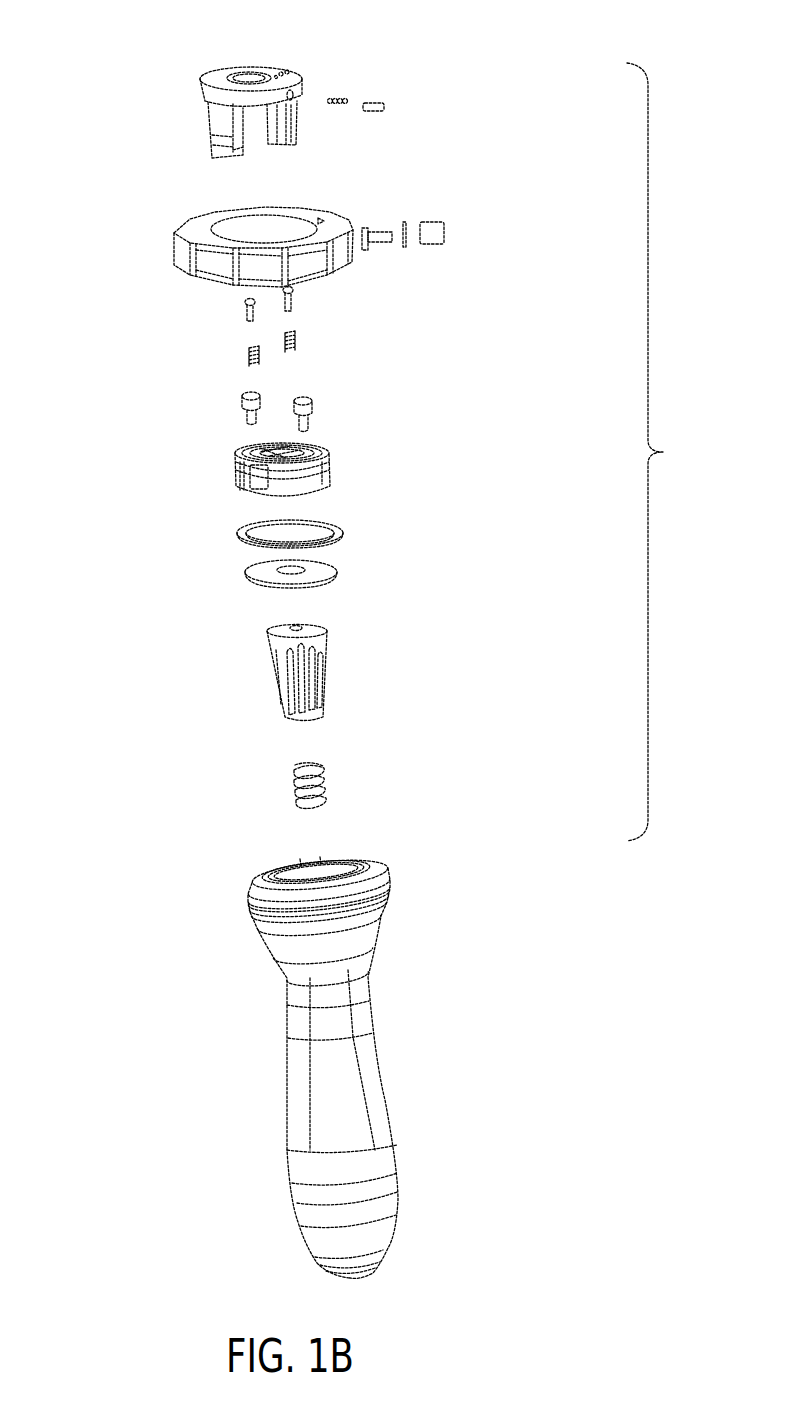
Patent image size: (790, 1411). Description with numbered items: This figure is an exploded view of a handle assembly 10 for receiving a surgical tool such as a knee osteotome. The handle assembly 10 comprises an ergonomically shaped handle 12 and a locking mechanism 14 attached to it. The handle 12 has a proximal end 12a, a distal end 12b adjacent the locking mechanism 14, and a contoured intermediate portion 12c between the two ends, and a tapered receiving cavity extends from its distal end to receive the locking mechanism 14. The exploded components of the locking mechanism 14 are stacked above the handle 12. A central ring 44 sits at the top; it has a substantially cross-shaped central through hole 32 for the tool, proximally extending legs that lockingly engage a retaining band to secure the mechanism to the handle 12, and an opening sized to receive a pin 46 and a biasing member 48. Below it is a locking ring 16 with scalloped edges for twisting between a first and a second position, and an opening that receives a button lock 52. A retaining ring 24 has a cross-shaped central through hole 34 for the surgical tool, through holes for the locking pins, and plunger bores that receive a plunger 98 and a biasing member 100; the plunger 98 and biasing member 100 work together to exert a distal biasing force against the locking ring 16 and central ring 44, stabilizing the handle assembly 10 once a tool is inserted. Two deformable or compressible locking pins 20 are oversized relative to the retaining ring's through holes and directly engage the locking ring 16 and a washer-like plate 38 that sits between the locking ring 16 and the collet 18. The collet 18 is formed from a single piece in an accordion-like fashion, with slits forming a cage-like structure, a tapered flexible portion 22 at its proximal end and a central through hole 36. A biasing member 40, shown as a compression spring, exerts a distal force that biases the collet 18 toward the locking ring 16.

The handle assembly 10 is at (123, 672).
The handle 12 is at (384, 1085).
The proximal end 12a is at (394, 1257).
The distal end 12b is at (395, 896).
The contoured intermediate portion 12c is at (283, 1055).
The locking mechanism 14 is at (658, 452).
The locking ring 16 is at (173, 250).
The collet 18 is at (333, 688).
The locking pin 20 is at (242, 402).
The tapered flexible portion 22 is at (279, 690).
The retaining ring 24 is at (331, 470).
The central through hole 32 is at (250, 76).
The central through hole 34 is at (263, 452).
The central through hole 36 is at (291, 627).
The plate 38 is at (337, 573).
The biasing member 40 is at (330, 792).
The central ring 44 is at (203, 95).
The pin 46 is at (377, 102).
The biasing member 48 is at (338, 98).
The button lock 52 is at (447, 233).
The plunger 98 is at (243, 311).
The biasing member 100 is at (247, 352).